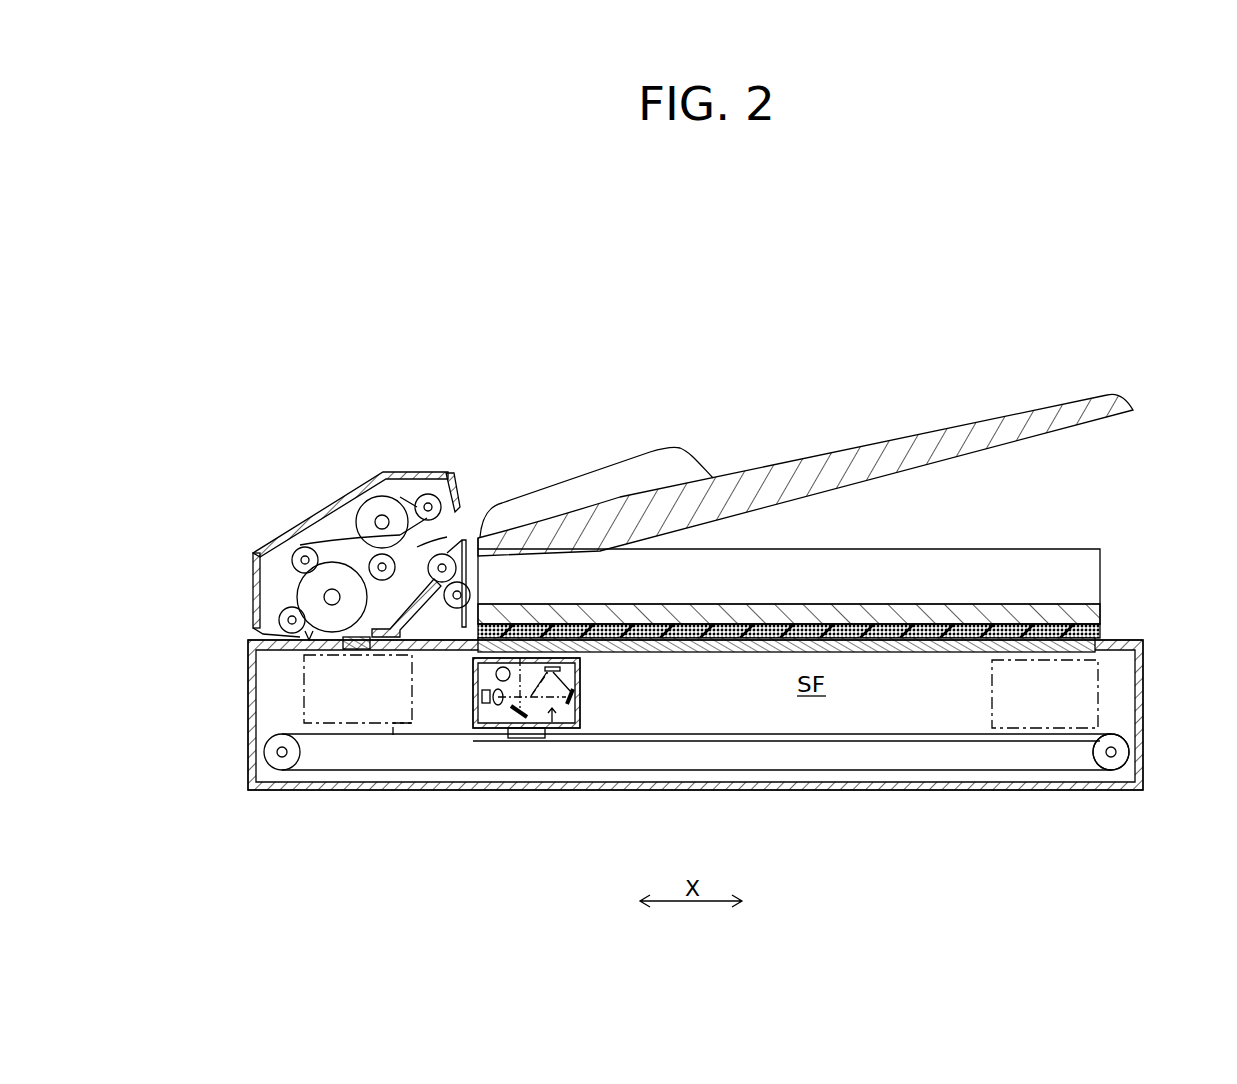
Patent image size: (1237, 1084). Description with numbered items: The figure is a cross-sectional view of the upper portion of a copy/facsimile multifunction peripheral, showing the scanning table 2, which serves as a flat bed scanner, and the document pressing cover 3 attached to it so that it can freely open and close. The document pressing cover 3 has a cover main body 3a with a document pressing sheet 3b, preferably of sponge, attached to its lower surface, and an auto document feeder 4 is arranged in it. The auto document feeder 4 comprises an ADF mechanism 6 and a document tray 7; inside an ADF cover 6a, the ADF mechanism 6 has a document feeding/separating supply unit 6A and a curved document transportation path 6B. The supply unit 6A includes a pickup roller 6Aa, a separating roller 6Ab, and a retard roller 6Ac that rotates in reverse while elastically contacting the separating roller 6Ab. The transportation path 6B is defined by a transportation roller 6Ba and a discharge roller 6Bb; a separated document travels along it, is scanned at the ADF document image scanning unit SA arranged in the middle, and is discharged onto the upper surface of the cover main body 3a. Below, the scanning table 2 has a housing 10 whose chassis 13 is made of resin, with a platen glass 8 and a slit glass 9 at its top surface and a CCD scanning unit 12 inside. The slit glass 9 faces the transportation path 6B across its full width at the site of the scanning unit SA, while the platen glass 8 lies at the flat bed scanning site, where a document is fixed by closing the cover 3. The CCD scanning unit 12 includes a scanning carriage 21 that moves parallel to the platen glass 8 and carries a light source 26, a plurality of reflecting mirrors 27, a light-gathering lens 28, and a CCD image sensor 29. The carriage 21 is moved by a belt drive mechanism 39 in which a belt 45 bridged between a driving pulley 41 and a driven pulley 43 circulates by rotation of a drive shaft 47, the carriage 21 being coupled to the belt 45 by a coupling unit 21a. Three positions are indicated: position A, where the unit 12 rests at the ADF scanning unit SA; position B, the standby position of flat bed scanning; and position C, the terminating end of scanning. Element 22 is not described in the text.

The scanning table 2 is at (1110, 630).
The document pressing cover 3 is at (789, 574).
The cover main body 3a is at (840, 612).
The document pressing sheet 3b is at (968, 622).
The auto document feeder 4 is at (608, 398).
The ADF mechanism 6 is at (337, 546).
The document feeding/separating supply unit 6A is at (384, 462).
The pickup roller 6Aa is at (428, 494).
The separating roller 6Ab is at (385, 496).
The retard roller 6Ac is at (465, 415).
The ADF cover 6a is at (277, 535).
The document transportation path 6B is at (307, 640).
The transportation roller 6Ba is at (282, 616).
The discharge roller 6Bb is at (452, 552).
The document tray 7 is at (823, 470).
The platen glass 8 is at (918, 652).
The slit glass 9 is at (355, 652).
The housing 10 is at (1145, 650).
The CCD scanning unit 12 is at (598, 660).
The chassis 13 is at (1152, 695).
The scanning carriage 21 is at (540, 718).
The coupling unit 21a is at (528, 740).
The reading unit 22 is at (552, 730).
The light source 26 is at (496, 673).
The reflecting mirrors 27 is at (510, 713).
The light-gathering lens 28 is at (497, 705).
The CCD image sensor 29 is at (482, 696).
The belt drive mechanism 39 is at (729, 772).
The driving pulley 41 is at (1127, 748).
The driven pulley 43 is at (264, 749).
The belt 45 is at (803, 773).
The drive shaft 47 is at (1113, 768).
The (A) position A is at (393, 735).
The (B) position B is at (560, 743).
The (C) position C is at (995, 730).
The ADF document image scanning unit SA is at (407, 628).